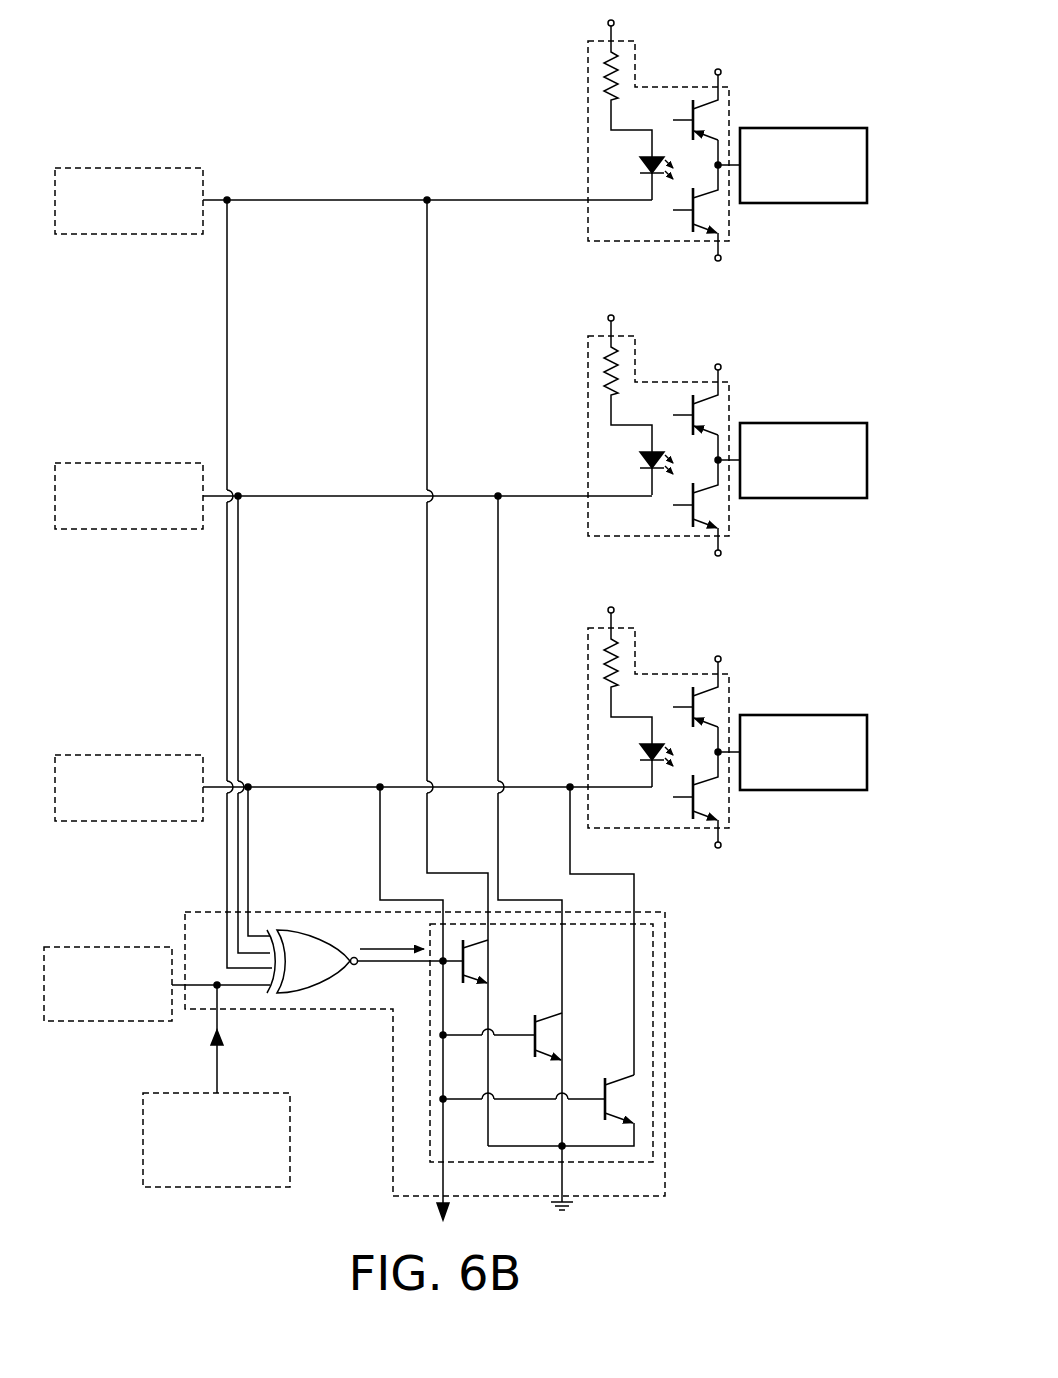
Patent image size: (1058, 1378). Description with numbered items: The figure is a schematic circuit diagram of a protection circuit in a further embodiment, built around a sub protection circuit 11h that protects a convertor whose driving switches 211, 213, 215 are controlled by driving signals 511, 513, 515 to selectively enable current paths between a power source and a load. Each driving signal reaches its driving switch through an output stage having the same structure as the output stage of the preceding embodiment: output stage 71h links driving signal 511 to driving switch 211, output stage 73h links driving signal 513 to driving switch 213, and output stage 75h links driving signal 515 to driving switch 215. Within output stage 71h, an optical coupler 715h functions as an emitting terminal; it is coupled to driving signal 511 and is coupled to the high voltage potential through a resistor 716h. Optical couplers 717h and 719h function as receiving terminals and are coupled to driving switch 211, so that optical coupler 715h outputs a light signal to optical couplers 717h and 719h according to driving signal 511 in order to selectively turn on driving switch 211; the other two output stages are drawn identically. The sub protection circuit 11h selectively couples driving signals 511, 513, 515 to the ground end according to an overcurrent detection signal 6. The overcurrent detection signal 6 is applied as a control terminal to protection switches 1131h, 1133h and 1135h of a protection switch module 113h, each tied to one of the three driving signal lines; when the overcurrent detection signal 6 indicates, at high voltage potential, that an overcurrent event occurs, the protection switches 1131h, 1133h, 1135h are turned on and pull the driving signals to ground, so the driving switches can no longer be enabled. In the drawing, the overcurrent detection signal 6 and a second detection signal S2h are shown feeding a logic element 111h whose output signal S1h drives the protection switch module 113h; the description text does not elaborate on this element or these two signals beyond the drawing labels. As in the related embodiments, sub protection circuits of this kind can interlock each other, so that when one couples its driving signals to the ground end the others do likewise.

The output stage 71h is at (675, 86).
The output stage 73h is at (664, 435).
The output stage 75h is at (664, 727).
The resistor 716h is at (604, 72).
The optical coupler 715h is at (640, 165).
The optical coupler 717h is at (720, 120).
The optical coupler 719h is at (720, 210).
The driving switch 211 is at (804, 128).
The driving switch 213 is at (803, 436).
The driving switch 215 is at (803, 728).
The driving signal 511 is at (128, 168).
The driving signal 513 is at (128, 463).
The driving signal 515 is at (128, 755).
The sub protection circuit 11h is at (665, 1021).
The XNOR logic gate 111h is at (318, 921).
The protection switch module 113h is at (653, 969).
The protection switch 1131h is at (487, 962).
The protection switch 1133h is at (568, 1032).
The protection switch 1135h is at (633, 1098).
The overcurrent detection signal 6 is at (107, 1023).
The output signal S1h is at (392, 938).
The second detection signal S2h is at (143, 1114).